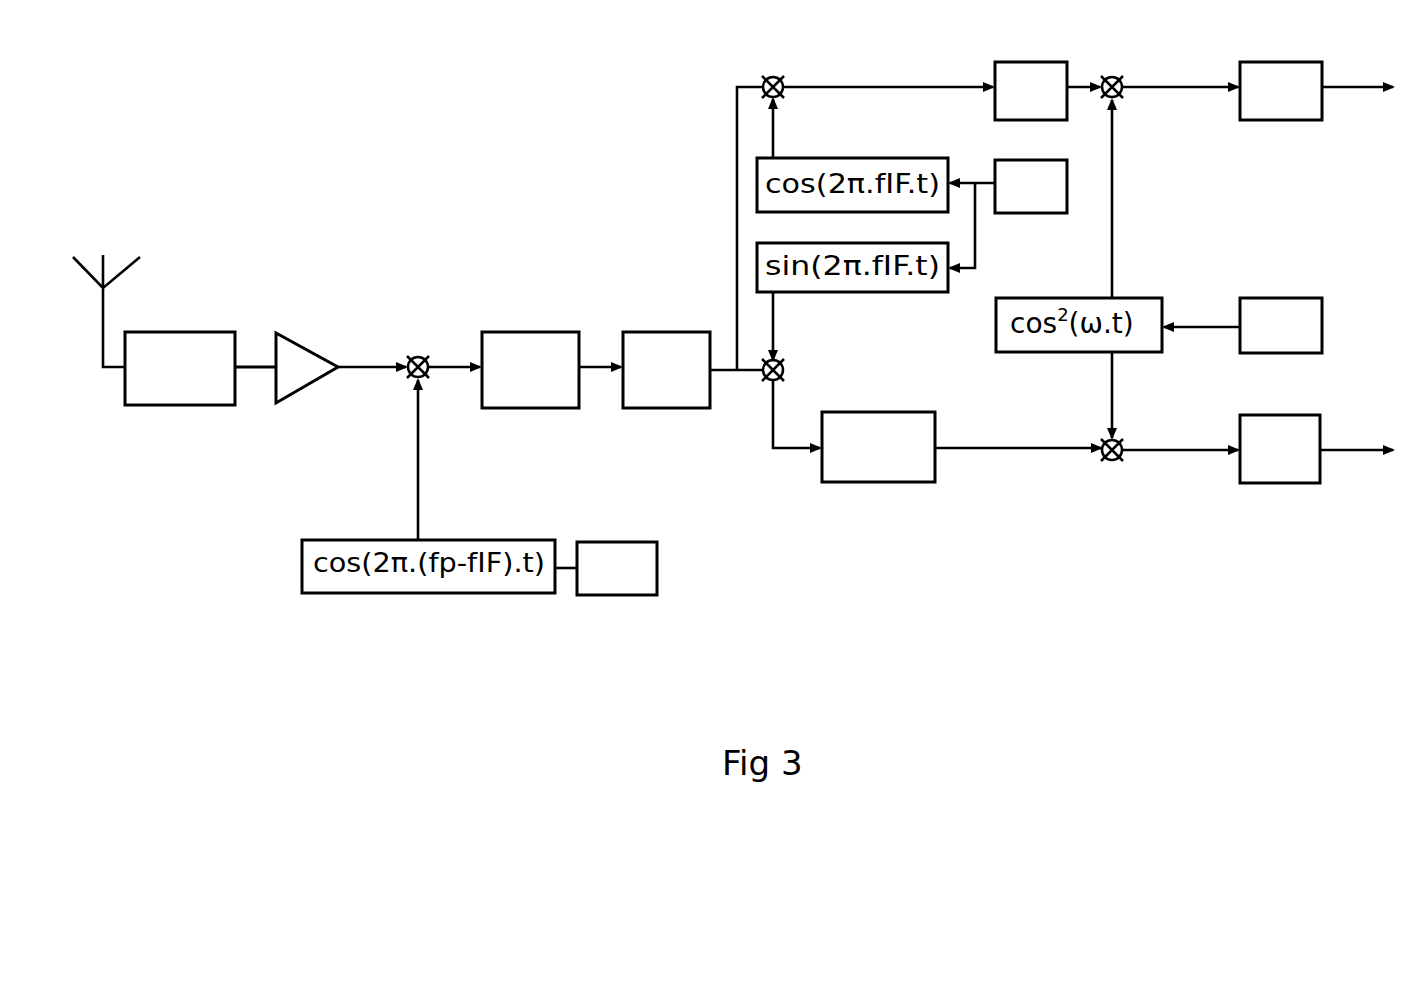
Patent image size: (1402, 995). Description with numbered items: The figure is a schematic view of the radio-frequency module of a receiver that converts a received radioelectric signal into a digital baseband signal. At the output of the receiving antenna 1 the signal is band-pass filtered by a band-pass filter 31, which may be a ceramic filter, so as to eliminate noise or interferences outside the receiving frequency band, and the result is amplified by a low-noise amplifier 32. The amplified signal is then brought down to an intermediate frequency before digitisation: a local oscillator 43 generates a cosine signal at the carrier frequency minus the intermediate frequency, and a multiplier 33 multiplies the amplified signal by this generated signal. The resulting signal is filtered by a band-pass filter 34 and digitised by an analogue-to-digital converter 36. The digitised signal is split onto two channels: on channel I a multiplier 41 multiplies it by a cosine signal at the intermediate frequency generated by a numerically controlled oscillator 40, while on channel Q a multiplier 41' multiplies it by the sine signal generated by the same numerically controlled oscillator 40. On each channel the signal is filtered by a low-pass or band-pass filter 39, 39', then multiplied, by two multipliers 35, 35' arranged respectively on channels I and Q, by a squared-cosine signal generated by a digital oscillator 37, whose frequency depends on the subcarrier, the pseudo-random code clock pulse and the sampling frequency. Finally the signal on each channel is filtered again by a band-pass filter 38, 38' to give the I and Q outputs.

The receiving antenna 1 is at (121, 268).
The band-pass filter 31 is at (166, 396).
The low-noise amplifier 32 is at (300, 346).
The multiplier 33 is at (412, 357).
The band-pass filter 34 is at (514, 338).
The analogue-to-digital converter 36 is at (653, 340).
The multiplier 41 is at (853, 59).
The multiplier 41' is at (768, 428).
The low-pass or band-pass filter 39 is at (1010, 70).
The low-pass or band-pass filter 39' is at (962, 415).
The numerically controlled oscillator 40 is at (1020, 166).
The multiplier 35 is at (1153, 162).
The multiplier 35' is at (1170, 406).
The digital oscillator 37 is at (1280, 306).
The band-pass filter 38 is at (1284, 70).
The band-pass filter 38' is at (1295, 509).
The local oscillator 43 is at (598, 586).